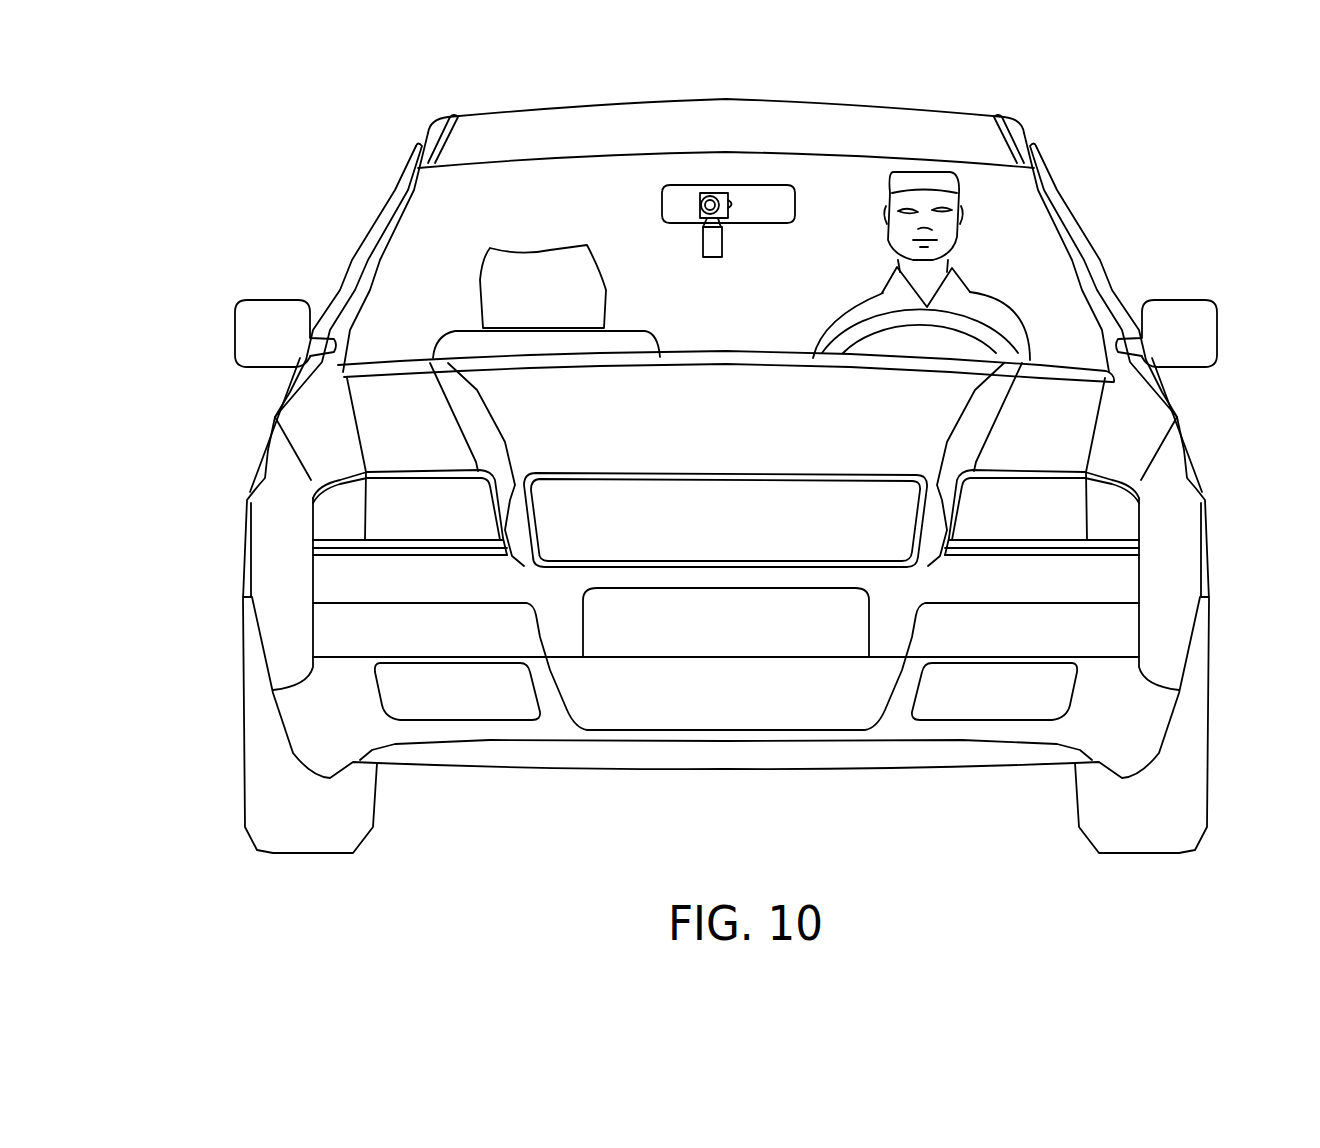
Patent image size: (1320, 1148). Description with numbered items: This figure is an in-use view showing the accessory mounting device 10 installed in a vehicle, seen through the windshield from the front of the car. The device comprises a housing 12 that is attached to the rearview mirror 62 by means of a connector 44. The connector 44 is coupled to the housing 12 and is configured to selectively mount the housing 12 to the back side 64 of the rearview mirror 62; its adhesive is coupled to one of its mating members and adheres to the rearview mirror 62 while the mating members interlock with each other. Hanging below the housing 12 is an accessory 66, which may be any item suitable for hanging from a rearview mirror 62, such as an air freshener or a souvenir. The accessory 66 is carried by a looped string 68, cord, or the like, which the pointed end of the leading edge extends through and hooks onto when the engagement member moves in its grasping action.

The accessory mounting device 10 is at (720, 184).
The housing 12 is at (722, 222).
The connector 44 is at (740, 206).
The rearview mirror 62 is at (773, 183).
The back side 64 is at (678, 215).
The accessory 66 is at (703, 250).
The looped string 68 is at (700, 229).